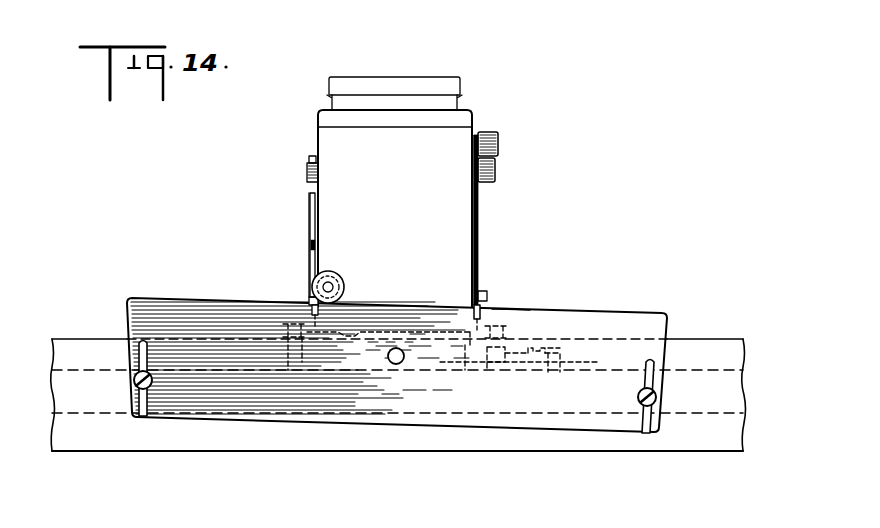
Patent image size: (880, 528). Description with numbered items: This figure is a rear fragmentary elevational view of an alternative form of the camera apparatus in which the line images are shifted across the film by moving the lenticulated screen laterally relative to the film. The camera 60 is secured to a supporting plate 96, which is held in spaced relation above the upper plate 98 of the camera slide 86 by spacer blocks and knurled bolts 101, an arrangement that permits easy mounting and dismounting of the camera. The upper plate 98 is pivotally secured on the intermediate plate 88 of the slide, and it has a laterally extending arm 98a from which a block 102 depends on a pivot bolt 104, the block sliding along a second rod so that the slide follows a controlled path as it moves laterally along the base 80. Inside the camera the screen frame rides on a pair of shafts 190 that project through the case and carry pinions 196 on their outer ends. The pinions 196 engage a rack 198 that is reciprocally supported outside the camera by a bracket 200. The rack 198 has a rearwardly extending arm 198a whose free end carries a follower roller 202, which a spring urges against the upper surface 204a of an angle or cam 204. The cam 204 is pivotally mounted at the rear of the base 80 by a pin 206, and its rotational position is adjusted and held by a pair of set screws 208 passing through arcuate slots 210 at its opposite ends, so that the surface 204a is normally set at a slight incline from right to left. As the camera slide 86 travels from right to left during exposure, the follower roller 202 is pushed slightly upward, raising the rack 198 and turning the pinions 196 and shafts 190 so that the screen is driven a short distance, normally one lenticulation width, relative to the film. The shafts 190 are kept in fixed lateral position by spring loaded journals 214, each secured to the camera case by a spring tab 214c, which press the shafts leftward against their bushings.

The camera 60 is at (458, 209).
The base 80 is at (720, 412).
The camera slide 86 is at (553, 333).
The intermediate plate 88 is at (493, 368).
The supporting plate 96 is at (470, 326).
The upper plate 98 is at (466, 364).
The laterally extending arm 98a is at (566, 354).
The knurled bolts 101 is at (506, 332).
The block 102 is at (552, 370).
The bolt 104 is at (548, 350).
The shafts 190 is at (308, 178).
The pinions 196 is at (313, 166).
The rack 198 is at (316, 207).
The rearwardly extending arm 198a is at (316, 253).
The bracket 200 is at (309, 217).
The follower roller 202 is at (340, 278).
The cam 204 is at (180, 322).
The upper surface 204a is at (510, 318).
The pin 206 is at (397, 366).
The set screws 208 is at (133, 381).
The arcuate slots 210 is at (149, 415).
The spring loaded journals 214 is at (547, 153).
The spring tab 214c is at (478, 243).